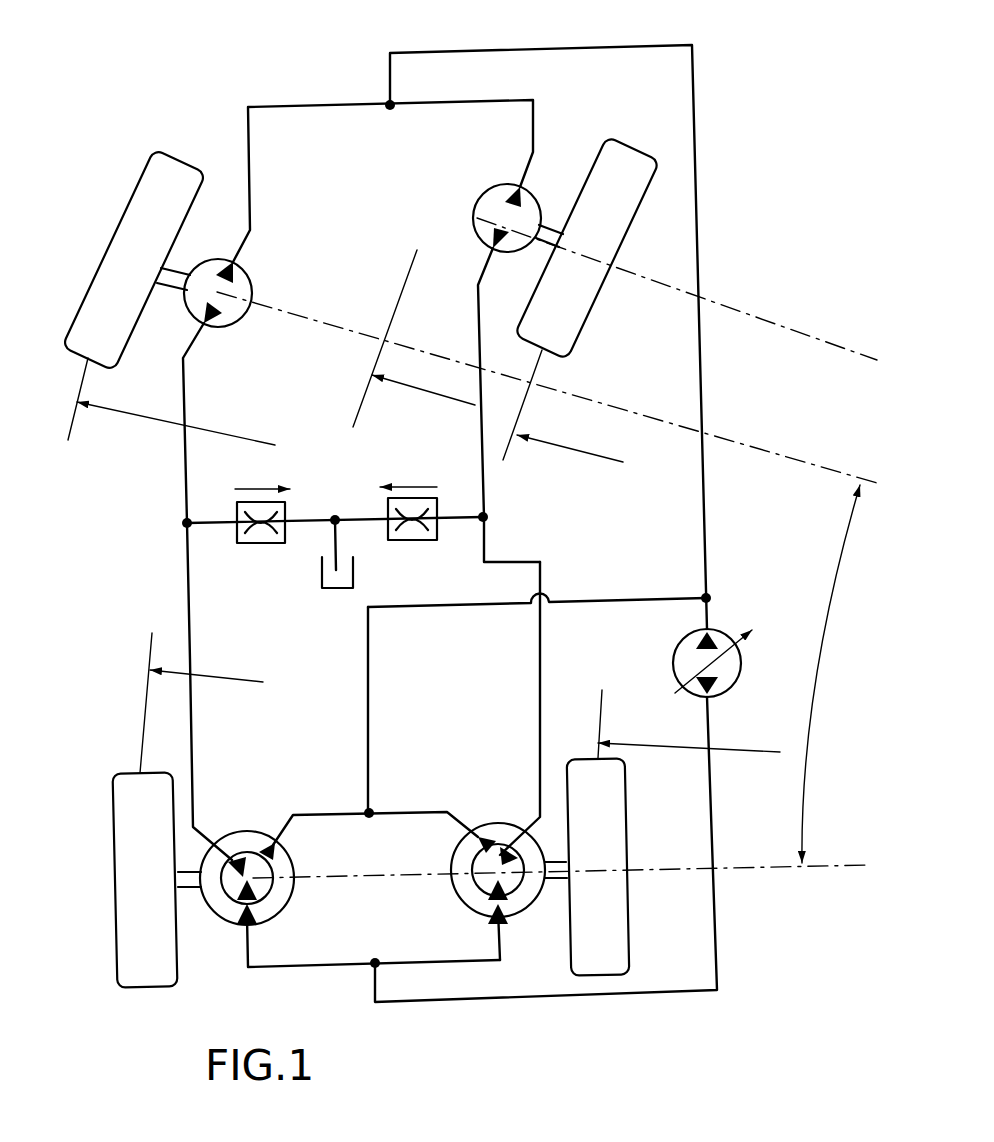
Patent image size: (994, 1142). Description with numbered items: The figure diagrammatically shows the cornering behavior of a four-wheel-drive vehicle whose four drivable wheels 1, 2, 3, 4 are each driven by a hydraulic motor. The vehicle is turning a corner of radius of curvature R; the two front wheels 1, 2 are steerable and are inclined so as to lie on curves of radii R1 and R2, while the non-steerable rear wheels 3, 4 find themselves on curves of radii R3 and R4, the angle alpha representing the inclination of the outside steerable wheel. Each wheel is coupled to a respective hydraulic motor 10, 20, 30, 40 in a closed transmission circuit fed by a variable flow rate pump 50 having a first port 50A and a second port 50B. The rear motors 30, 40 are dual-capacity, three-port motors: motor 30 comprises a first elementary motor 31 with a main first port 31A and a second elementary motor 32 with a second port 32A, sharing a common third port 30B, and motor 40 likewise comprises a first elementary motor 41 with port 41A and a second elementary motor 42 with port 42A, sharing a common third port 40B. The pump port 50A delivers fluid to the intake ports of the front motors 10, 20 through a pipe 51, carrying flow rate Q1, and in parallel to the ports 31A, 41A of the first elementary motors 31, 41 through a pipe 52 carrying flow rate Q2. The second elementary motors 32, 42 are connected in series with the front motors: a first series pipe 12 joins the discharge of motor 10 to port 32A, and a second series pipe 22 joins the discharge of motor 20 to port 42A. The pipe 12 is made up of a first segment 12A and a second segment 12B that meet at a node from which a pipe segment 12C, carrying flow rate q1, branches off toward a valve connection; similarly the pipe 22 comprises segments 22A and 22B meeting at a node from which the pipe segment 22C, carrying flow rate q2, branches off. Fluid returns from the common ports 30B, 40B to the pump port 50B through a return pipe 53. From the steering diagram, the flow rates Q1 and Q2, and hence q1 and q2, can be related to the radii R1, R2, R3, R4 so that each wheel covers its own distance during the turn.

The front wheel 1 is at (147, 197).
The front wheel 2 is at (570, 334).
The rear wheel 3 is at (127, 803).
The rear wheel 4 is at (625, 937).
The hydraulic motor 10 is at (250, 286).
The hydraulic motor 20 is at (478, 218).
The hydraulic motor 30 is at (339, 847).
The hydraulic motor 40 is at (482, 832).
The first series pipe 12 is at (155, 548).
The first segment 12A is at (187, 513).
The second segment 12B is at (187, 625).
The pipe segment 12C is at (306, 525).
The second series pipe 22 is at (520, 536).
The first segment 22A is at (485, 477).
The second segment 22B is at (540, 651).
The pipe segment 22C is at (372, 515).
The first elementary motor 31 is at (280, 907).
The main first port 31A is at (276, 845).
The second elementary motor 32 is at (272, 879).
The second port 32A is at (238, 855).
The third port 30B is at (247, 916).
The first elementary motor 41 is at (460, 858).
The main first port 41A is at (478, 830).
The second elementary motor 42 is at (475, 882).
The second port 42A is at (500, 850).
The third port 40B is at (510, 908).
The pump 50 is at (735, 674).
The first port 50A is at (693, 636).
The second port 50B is at (694, 692).
The pipe 51 is at (588, 45).
The pipe 52 is at (590, 598).
The pipe 53 is at (717, 935).
The flow rate Q1 is at (475, 35).
The flow rate Q2 is at (415, 593).
The flow rate q1 is at (262, 478).
The flow rate q2 is at (408, 474).
The radius of curvature R is at (414, 338).
The radius of curvature R1 is at (176, 423).
The radius of curvature R2 is at (570, 441).
The radius of curvature R3 is at (206, 663).
The radius of curvature R4 is at (689, 761).